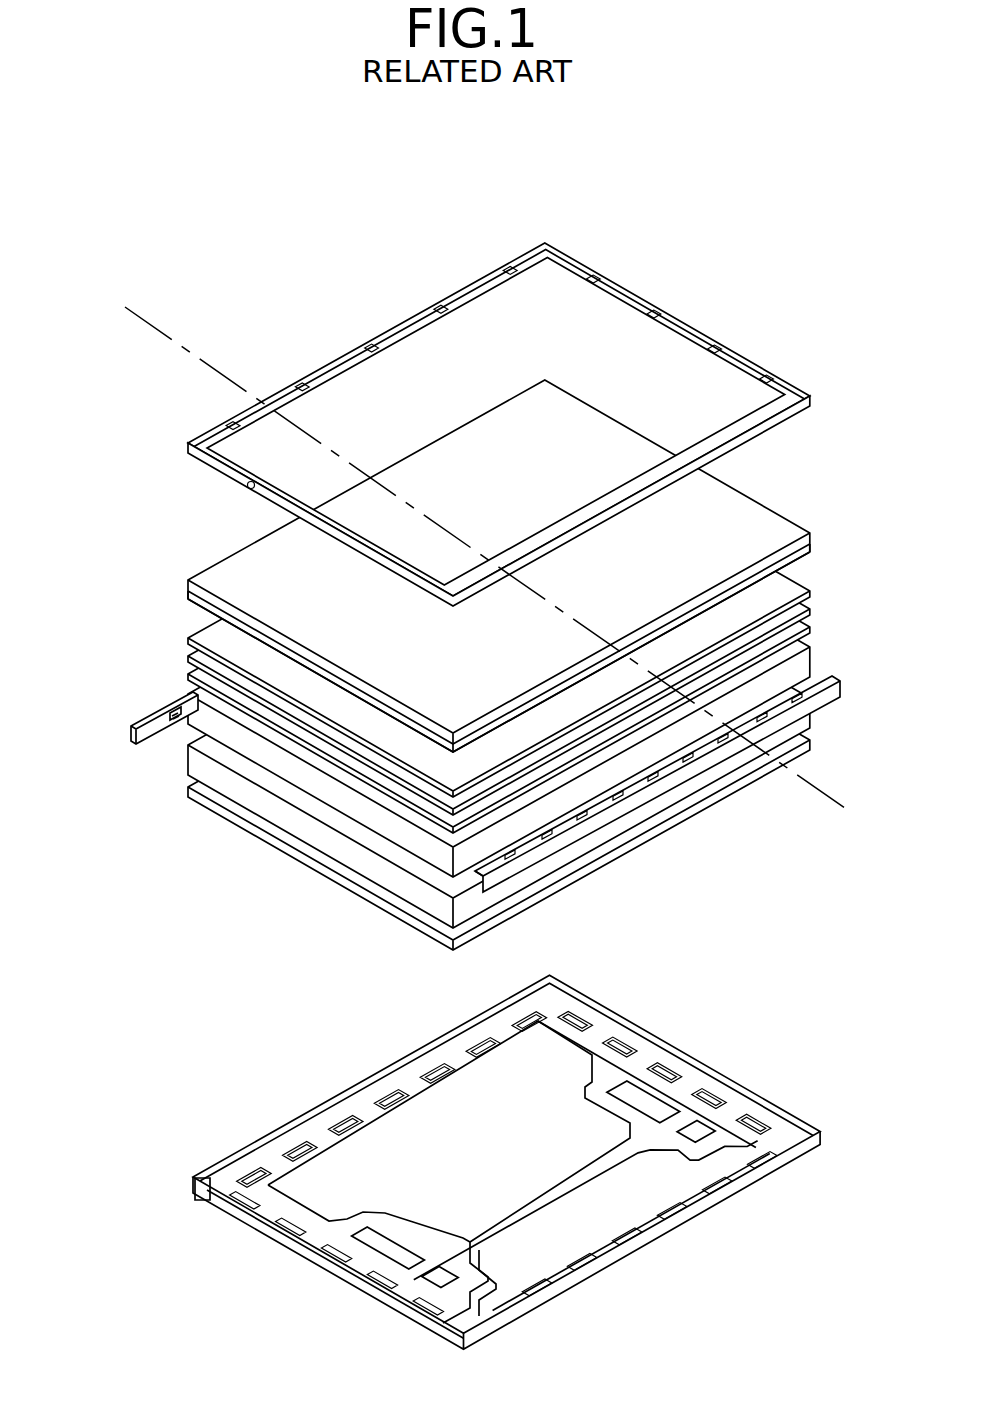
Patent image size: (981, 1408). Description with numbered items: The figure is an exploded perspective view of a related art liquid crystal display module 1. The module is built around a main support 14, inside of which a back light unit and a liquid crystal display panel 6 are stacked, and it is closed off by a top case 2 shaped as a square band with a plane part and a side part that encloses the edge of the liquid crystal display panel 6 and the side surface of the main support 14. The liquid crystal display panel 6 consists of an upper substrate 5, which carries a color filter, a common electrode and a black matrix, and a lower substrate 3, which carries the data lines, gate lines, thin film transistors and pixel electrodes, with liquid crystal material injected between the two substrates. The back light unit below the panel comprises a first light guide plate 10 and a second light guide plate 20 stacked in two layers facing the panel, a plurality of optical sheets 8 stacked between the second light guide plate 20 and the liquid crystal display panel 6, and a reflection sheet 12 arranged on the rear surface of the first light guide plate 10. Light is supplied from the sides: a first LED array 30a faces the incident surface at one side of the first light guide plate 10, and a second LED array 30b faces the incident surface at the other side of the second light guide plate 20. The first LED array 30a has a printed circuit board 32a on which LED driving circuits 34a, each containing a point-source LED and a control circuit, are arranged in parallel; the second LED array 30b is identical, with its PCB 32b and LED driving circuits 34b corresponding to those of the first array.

The liquid crystal display module 1 is at (698, 236).
The top case 2 is at (795, 378).
The lower substrate 3 is at (810, 548).
The upper substrate 5 is at (810, 533).
The liquid crystal display panel 6 is at (534, 566).
The optical sheets 8 is at (810, 630).
The first light guide plate 10 is at (811, 713).
The reflection sheet 12 is at (811, 745).
The main support 14 is at (758, 1142).
The second light guide plate 20 is at (812, 662).
The first LED array 30a is at (115, 697).
The printed circuit board 32a is at (167, 707).
The LED driving circuits 34a is at (172, 715).
The second LED array 30b is at (657, 784).
The PCB 32b is at (628, 808).
The LED driving circuits 34b is at (657, 777).